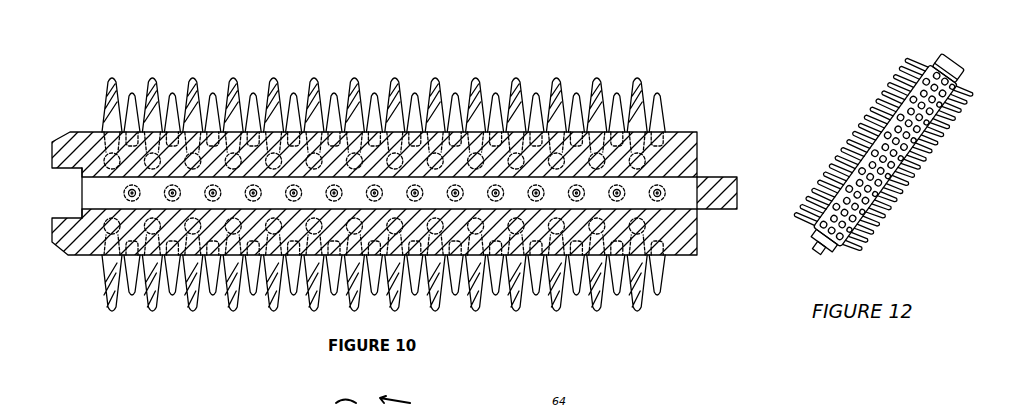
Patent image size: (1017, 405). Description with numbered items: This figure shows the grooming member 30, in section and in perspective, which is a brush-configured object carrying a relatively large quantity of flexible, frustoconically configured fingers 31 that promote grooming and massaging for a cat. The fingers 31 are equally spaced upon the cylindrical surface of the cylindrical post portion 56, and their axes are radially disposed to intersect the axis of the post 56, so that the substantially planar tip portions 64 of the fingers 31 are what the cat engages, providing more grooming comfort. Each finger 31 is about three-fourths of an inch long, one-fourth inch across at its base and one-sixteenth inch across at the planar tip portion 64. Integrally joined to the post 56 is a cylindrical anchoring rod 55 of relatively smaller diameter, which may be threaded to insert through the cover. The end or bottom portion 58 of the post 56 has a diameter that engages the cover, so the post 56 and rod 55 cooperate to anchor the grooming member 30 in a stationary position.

In FIG. 10, the grooming member 30 is at (680, 103).
In FIG. 12, the grooming member 30 is at (893, 242).
In FIG. 10, the fingers 31 is at (150, 88).
In FIG. 12, the fingers 31 is at (917, 63).
In FIG. 10, the planar tip portion 64 is at (293, 92).
In FIG. 12, the planar tip portion 64 is at (848, 140).
In FIG. 10, the end or bottom portion 58 is at (698, 150).
In FIG. 12, the end or bottom portion 58 is at (818, 240).
In FIG. 10, the cylindrical post portion 56 is at (687, 260).
In FIG. 10, the anchoring rod 55 is at (725, 213).
In FIG. 12, the anchoring rod 55 is at (826, 256).